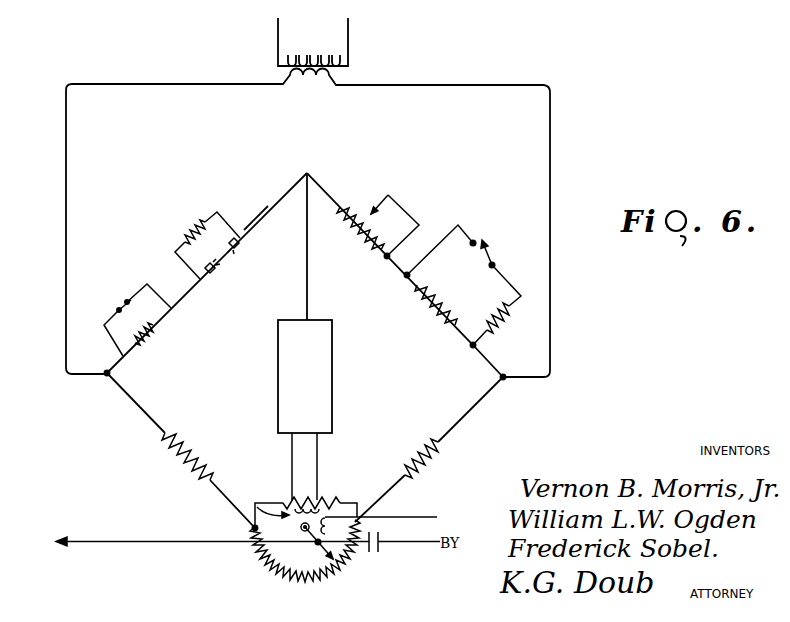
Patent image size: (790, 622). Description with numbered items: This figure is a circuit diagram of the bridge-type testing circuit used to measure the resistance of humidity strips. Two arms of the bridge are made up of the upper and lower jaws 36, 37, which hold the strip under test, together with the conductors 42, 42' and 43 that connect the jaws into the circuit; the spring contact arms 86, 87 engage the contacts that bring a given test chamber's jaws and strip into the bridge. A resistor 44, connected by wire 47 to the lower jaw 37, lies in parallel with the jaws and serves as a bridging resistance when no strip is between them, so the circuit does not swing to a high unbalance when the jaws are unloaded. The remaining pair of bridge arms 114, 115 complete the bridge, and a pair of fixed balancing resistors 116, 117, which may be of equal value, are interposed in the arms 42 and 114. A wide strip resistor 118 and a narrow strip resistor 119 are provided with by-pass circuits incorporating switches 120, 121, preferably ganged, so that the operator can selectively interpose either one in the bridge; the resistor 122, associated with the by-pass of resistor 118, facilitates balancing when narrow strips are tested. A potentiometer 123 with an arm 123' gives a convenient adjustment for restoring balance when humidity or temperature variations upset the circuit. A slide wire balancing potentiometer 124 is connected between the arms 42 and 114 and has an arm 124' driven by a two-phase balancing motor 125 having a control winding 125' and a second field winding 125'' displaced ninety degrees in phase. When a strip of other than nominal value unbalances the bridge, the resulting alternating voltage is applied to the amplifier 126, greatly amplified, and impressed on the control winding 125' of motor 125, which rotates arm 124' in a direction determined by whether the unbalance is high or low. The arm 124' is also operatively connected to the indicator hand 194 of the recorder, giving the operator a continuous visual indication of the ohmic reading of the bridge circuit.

The bridge arm 115 is at (315, 182).
The potentiometer 123 is at (368, 230).
The potentiometer arm 123' is at (388, 185).
The switch 120 is at (487, 254).
The resistor 122 is at (487, 318).
The wide strip resistor 118 is at (428, 318).
The bridge arm 114 is at (472, 410).
The fixed balancing resistor 117 is at (424, 462).
The fixed balancing resistor 116 is at (180, 477).
The conductor 42 is at (168, 450).
The conductor 42' is at (210, 300).
The resistor 44 is at (191, 231).
The wire 47 is at (219, 211).
The spring contact arm 86 is at (260, 219).
The conductor 43 is at (249, 231).
The lower jaw 37 is at (238, 248).
The upper jaw 36 is at (215, 271).
The spring contact arm 87 is at (187, 294).
The switch 121 is at (130, 297).
The narrow strip resistor 119 is at (145, 330).
The amplifier 126 is at (278, 373).
The two-phase balancing motor 125 is at (291, 500).
The control winding 125' is at (342, 483).
The field winding 125'' is at (379, 509).
The slide wire balancing potentiometer 124 is at (316, 560).
The potentiometer arm 124' is at (377, 563).
The indicator hand 194 is at (229, 559).